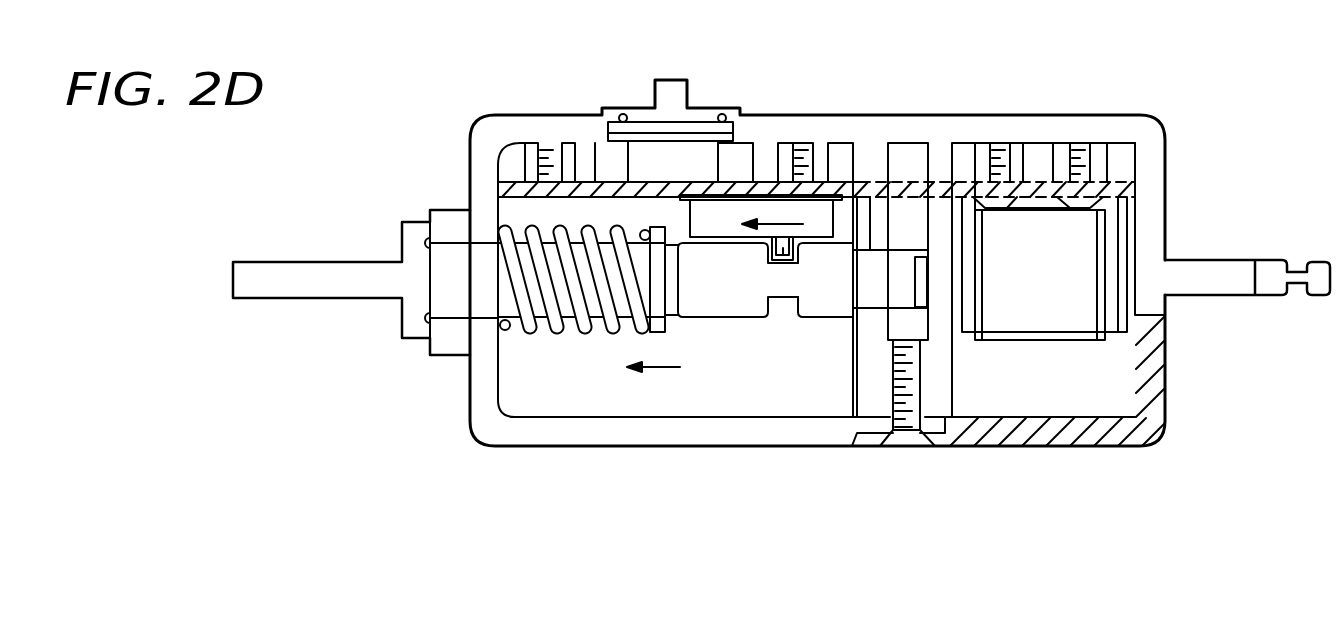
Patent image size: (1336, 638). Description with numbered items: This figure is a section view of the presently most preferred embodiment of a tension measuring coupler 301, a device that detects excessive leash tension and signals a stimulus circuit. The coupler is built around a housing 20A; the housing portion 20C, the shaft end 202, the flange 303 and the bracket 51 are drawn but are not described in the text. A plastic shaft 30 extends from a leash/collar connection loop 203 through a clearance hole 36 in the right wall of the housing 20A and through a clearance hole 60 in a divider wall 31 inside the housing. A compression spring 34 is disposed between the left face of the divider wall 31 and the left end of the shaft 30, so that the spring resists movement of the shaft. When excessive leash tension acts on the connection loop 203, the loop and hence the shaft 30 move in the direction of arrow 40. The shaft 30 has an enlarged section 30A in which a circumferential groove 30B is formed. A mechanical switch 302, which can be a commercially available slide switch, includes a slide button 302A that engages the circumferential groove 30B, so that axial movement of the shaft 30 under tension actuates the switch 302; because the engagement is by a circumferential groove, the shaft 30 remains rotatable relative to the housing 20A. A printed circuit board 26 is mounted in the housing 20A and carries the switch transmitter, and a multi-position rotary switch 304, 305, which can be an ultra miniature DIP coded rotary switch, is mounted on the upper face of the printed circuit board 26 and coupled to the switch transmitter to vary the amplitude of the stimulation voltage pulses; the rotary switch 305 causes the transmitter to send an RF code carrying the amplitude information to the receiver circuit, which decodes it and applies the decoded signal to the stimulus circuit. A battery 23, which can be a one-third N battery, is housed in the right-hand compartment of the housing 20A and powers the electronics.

The tension measuring coupler 301 is at (340, 491).
The housing 20A is at (848, 119).
The housing end wall 20C is at (1108, 432).
The printed circuit board 26 is at (592, 186).
The leash/collar connection loop 203 is at (318, 262).
The output shaft 202 is at (1268, 268).
The clearance hole 36 is at (434, 251).
The shaft 30 is at (545, 328).
The compression spring 34 is at (592, 328).
The arrow 40 is at (655, 369).
The enlarged section 30A is at (693, 308).
The circumferential groove 30B is at (767, 317).
The mechanical switch 302 is at (738, 213).
The slide button 302A is at (783, 256).
The slide plate flange 303 is at (775, 222).
The multi-position rotary switch 304 is at (672, 80).
The rotary switch 305 is at (650, 160).
The clearance hole 60 is at (880, 252).
The divider wall 31 is at (873, 393).
The bracket 51 is at (940, 402).
The battery 23 is at (1088, 238).